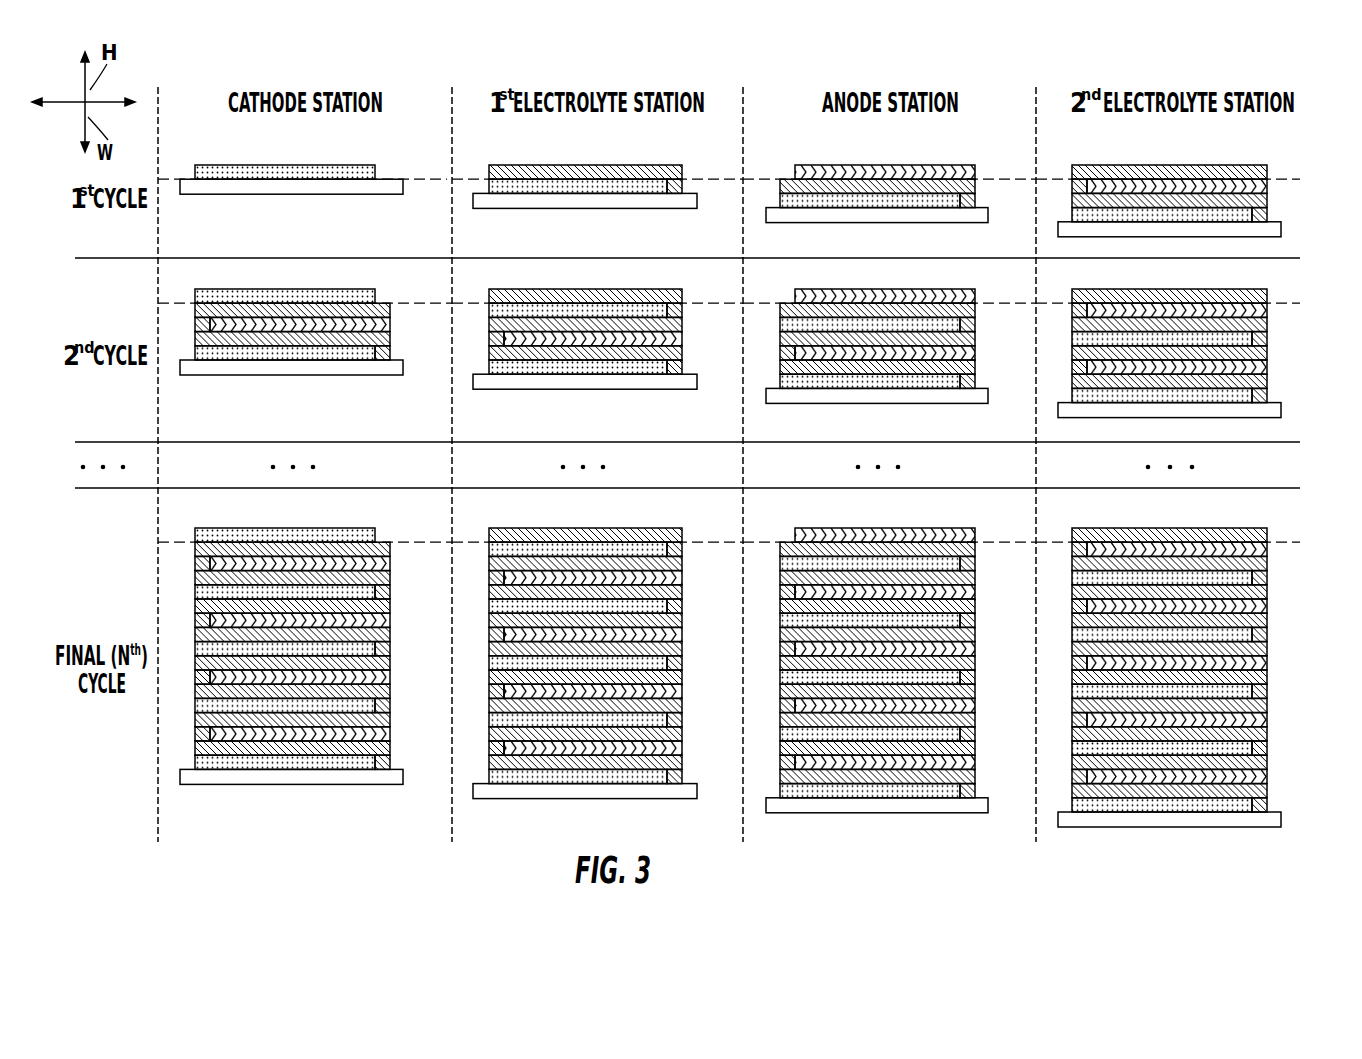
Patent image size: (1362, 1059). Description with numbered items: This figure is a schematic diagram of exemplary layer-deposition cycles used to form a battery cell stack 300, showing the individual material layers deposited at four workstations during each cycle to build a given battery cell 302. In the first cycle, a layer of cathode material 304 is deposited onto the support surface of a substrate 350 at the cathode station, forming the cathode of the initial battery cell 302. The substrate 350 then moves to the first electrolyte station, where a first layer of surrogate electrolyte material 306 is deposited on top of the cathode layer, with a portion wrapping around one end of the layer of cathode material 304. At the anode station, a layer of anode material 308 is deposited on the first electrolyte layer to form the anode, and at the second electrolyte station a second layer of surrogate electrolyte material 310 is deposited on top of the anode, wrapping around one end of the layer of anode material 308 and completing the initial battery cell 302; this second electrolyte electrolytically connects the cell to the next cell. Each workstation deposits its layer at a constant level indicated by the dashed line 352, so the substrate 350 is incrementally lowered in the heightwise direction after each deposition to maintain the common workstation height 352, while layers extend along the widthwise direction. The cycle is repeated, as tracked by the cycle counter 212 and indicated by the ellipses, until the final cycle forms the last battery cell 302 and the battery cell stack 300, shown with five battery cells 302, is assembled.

The cycle counter 212 is at (241, 848).
The battery cell stack 300 is at (1063, 792).
The battery cell 302 is at (1290, 165).
The layer of cathode material 304 is at (318, 163).
The first layer of surrogate electrolyte material 306 is at (607, 163).
The layer of anode material 308 is at (897, 163).
The second layer of surrogate electrolyte material 310 is at (1190, 163).
The substrate 350 is at (272, 193).
The common workstation height 352 is at (430, 178).